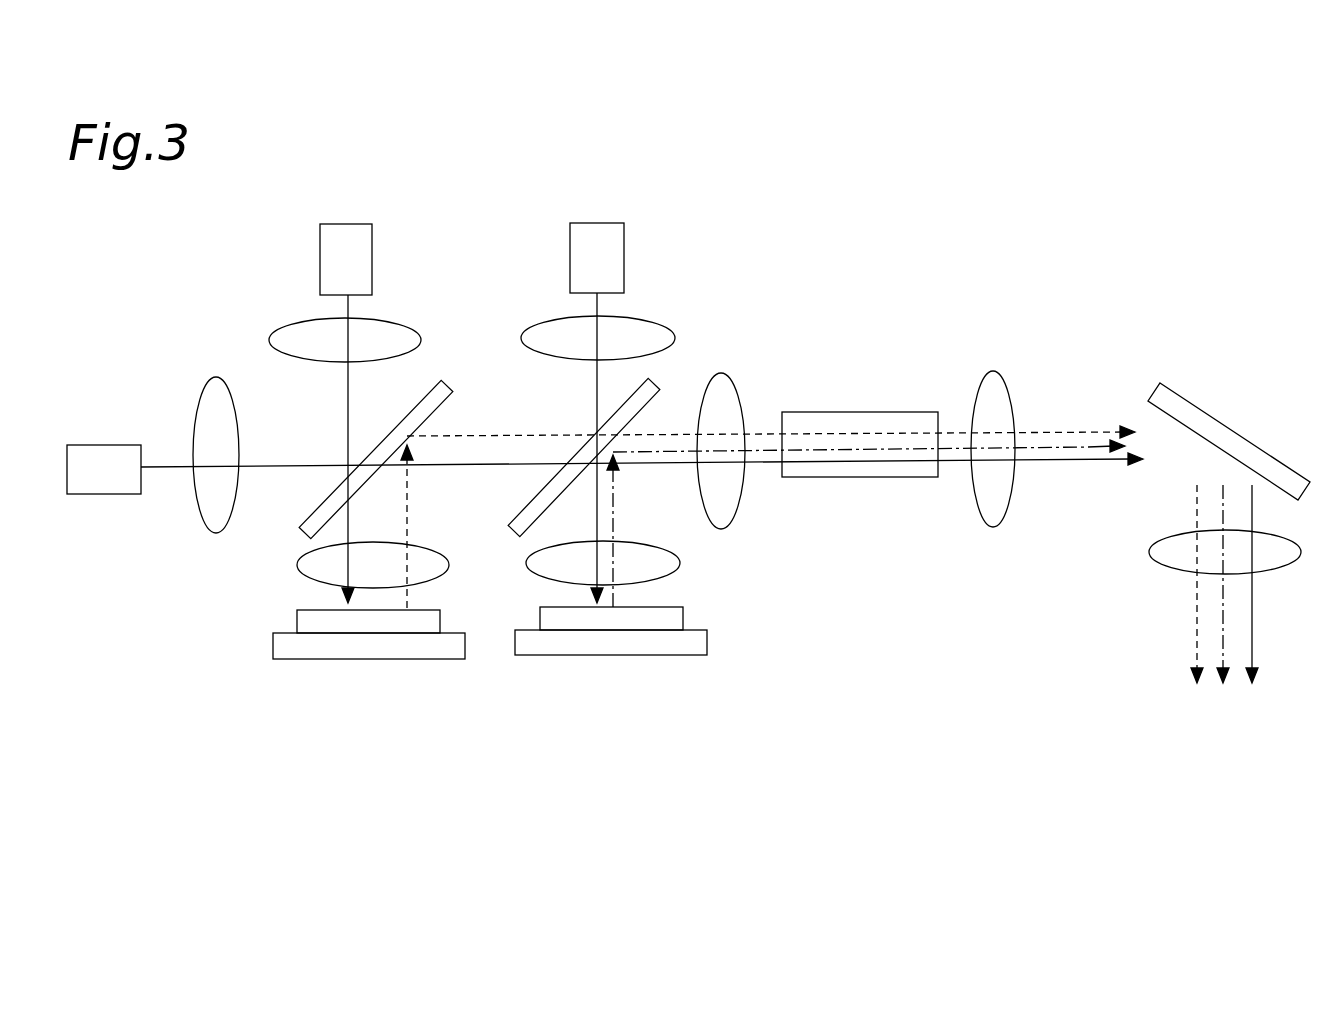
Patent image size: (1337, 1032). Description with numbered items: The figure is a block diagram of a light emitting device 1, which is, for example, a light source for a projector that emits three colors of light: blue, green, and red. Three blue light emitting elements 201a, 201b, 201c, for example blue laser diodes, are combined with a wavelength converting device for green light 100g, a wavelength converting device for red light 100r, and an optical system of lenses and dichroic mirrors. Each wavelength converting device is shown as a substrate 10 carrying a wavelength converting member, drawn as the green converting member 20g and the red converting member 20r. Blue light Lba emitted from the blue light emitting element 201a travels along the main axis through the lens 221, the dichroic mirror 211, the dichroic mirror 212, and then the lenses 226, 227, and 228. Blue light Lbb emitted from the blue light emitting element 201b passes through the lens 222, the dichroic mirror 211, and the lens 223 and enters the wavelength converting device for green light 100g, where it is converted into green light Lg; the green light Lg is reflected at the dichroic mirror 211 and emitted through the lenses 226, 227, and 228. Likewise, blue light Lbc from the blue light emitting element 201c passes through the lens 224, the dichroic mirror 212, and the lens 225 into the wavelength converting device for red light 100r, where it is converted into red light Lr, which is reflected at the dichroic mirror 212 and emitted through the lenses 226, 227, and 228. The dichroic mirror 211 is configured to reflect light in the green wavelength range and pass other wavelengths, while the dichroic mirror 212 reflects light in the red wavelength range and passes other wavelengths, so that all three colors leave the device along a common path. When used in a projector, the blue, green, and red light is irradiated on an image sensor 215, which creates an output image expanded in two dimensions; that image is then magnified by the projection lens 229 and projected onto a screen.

The light emitting device 1 is at (1145, 755).
The substrate 10 is at (368, 652).
The green phosphor layer 20g is at (388, 727).
The red phosphor layer 20r is at (675, 617).
The wavelength converting device for green light 100g is at (347, 697).
The wavelength converting device for red light 100r is at (693, 617).
The blue light emitting element 201a is at (100, 445).
The blue light emitting element 201b is at (355, 236).
The blue light emitting element 201c is at (592, 223).
The dichroic mirror 211 is at (445, 388).
The dichroic mirror 212 is at (657, 390).
The image sensor 215 is at (1250, 437).
The lens 221 is at (195, 412).
The lens 222 is at (288, 332).
The lens 223 is at (298, 565).
The lens 224 is at (545, 332).
The lens 225 is at (540, 568).
The lens 226 is at (730, 412).
The lens 227 is at (862, 411).
The lens 228 is at (1003, 397).
The projection lens 229 is at (1290, 555).
The blue light Lba is at (165, 468).
The blue light Lbb is at (348, 410).
The blue light Lbc is at (597, 400).
The green light Lg is at (407, 510).
The red light Lr is at (613, 505).